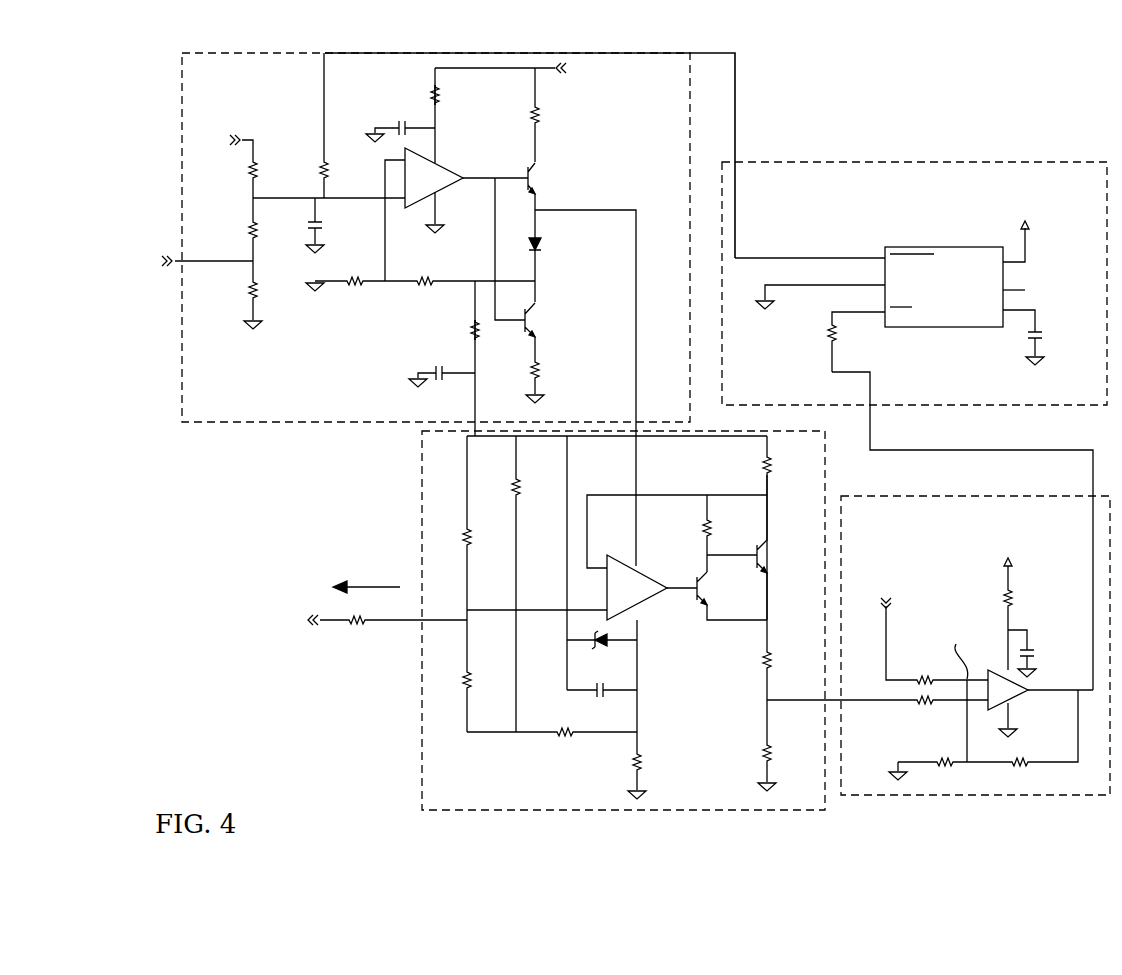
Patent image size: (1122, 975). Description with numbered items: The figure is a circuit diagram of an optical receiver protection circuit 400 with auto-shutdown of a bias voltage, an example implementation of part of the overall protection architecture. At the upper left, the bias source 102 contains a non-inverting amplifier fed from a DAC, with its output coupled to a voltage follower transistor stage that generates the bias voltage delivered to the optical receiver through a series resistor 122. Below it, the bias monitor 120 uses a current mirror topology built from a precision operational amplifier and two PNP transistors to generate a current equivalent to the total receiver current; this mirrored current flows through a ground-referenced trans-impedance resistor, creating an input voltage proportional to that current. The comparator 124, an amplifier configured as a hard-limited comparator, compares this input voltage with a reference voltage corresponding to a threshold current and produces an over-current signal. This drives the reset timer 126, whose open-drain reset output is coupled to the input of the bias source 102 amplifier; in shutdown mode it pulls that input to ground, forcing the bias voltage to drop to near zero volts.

The optical receiver protection circuit 400 is at (255, 482).
The bias source 102 is at (355, 403).
The bias monitor 120 is at (600, 804).
The series resistor 122 is at (345, 626).
The comparator 124 is at (1018, 521).
The reset timer 126 is at (971, 188).